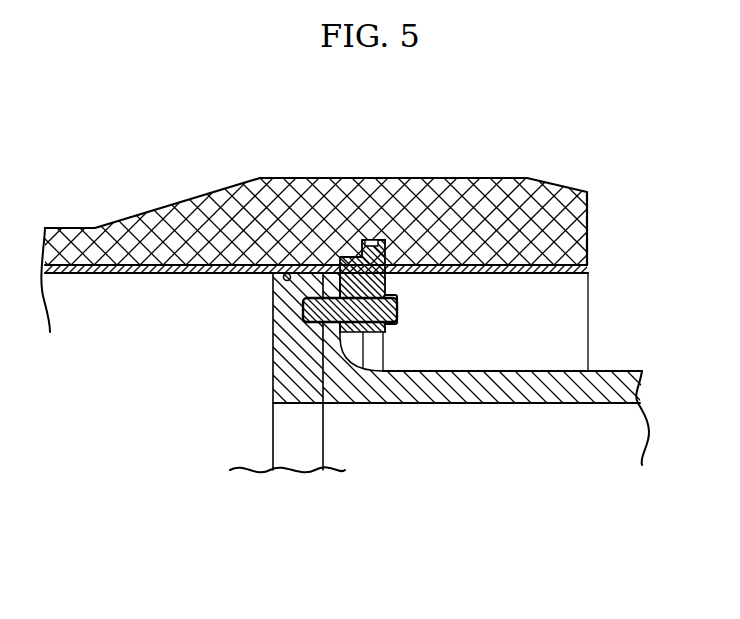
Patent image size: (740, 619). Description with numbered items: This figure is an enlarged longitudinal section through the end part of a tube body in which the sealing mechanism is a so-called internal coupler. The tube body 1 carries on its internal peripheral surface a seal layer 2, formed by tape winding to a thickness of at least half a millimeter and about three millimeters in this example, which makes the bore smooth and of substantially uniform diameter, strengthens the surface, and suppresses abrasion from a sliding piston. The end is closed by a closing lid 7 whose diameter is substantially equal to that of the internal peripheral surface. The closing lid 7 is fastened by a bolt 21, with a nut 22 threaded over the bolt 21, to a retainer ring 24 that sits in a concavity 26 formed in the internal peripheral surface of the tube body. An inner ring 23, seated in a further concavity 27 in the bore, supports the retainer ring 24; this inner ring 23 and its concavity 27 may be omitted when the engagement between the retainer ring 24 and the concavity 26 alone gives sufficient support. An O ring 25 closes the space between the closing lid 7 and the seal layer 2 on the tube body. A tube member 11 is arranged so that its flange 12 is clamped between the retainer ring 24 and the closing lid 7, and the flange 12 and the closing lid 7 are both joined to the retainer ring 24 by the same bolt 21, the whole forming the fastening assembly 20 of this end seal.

The panel body 1 is at (140, 213).
The seal layer 2 is at (95, 275).
The closing lid 7 is at (278, 375).
The tube member 11 is at (600, 370).
The flange 12 is at (347, 345).
The fastening assembly 20 is at (330, 263).
The bolt 21 is at (397, 312).
The nut 22 is at (397, 293).
The inner ring 23 is at (387, 247).
The retainer ring 24 is at (367, 240).
The O ring 25 is at (286, 268).
The concavity 26 is at (345, 255).
The concavity 27 is at (377, 240).